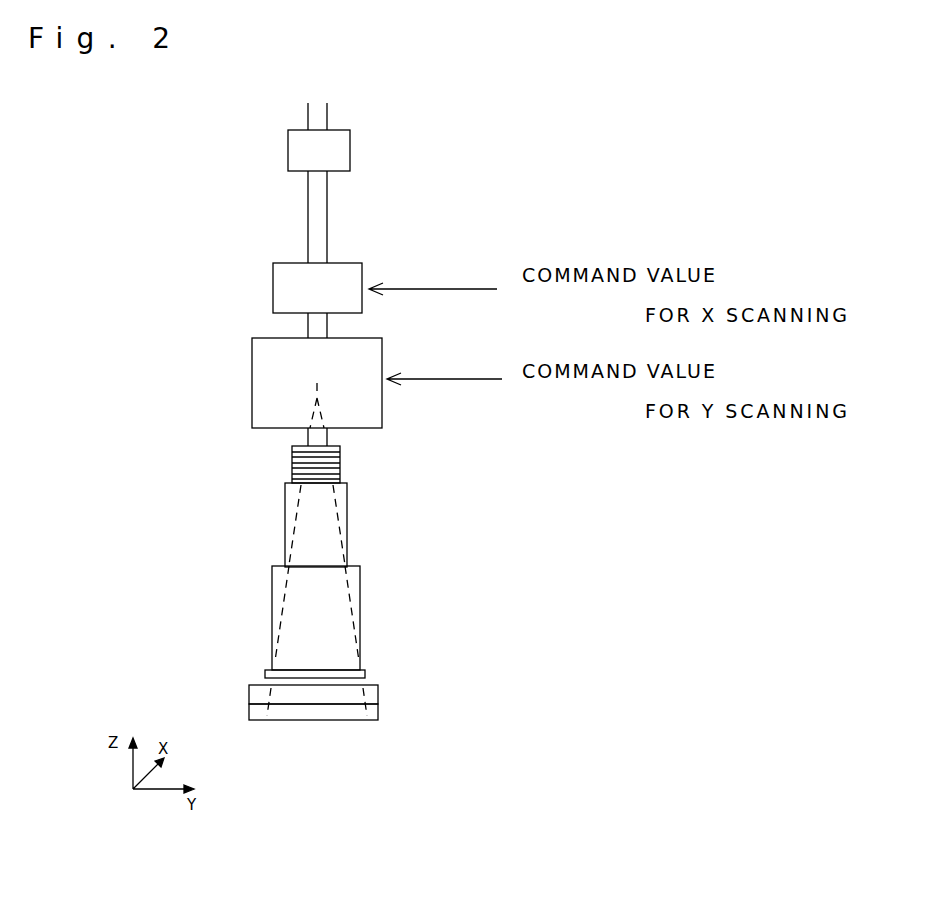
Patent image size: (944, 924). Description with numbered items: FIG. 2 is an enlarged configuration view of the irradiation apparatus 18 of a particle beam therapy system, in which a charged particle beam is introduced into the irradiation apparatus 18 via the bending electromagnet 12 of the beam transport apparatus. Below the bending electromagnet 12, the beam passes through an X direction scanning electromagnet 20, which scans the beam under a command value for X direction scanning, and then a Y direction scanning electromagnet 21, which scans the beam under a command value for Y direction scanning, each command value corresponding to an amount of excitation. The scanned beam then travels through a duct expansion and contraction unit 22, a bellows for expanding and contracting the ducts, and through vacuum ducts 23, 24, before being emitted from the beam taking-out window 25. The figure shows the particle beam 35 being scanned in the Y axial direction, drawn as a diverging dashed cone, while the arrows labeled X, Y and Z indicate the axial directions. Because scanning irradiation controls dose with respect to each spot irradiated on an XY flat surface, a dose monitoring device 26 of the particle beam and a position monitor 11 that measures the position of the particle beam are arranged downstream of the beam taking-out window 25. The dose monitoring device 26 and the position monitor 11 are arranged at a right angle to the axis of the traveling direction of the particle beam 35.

The position monitor 11 is at (378, 716).
The bending electromagnet 12 is at (350, 143).
The irradiation apparatus 18 is at (228, 437).
The X direction scanning electromagnet 20 is at (362, 268).
The Y direction scanning electromagnet 21 is at (382, 346).
The duct expansion and contraction unit 22 is at (340, 462).
The vacuum duct 23 is at (347, 528).
The vacuum duct 24 is at (360, 592).
The beam taking-out window 25 is at (365, 673).
The dose monitoring device 26 is at (378, 692).
The particle beam 35 is at (296, 513).